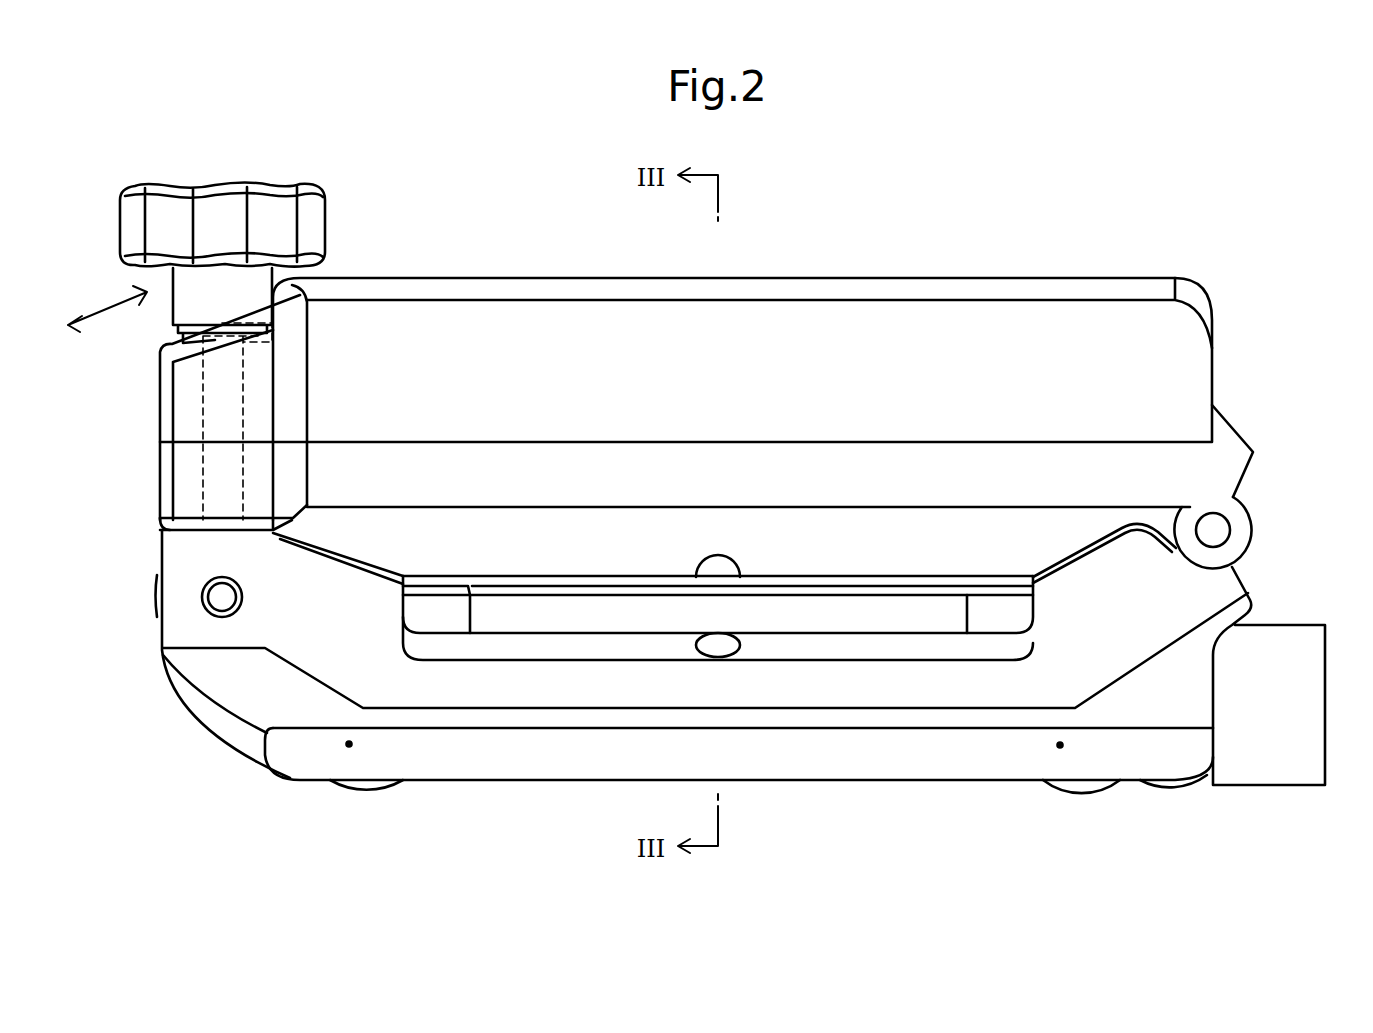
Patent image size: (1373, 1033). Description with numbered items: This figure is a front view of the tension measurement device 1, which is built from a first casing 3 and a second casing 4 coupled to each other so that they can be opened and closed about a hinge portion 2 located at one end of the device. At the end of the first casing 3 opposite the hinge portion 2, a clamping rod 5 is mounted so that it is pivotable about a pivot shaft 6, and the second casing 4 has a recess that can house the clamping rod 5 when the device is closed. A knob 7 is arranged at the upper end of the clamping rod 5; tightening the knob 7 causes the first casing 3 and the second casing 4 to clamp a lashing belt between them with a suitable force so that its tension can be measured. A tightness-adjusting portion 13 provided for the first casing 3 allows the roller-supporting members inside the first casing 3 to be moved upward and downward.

The tension measurement device 1 is at (1161, 220).
The hinge portion 2 is at (1253, 518).
The first casing 3 is at (861, 770).
The second casing 4 is at (858, 286).
The clamping rod 5 is at (203, 463).
The pivot shaft 6 is at (222, 598).
The knob 7 is at (326, 222).
The tightness-adjusting portion 13 is at (1288, 638).